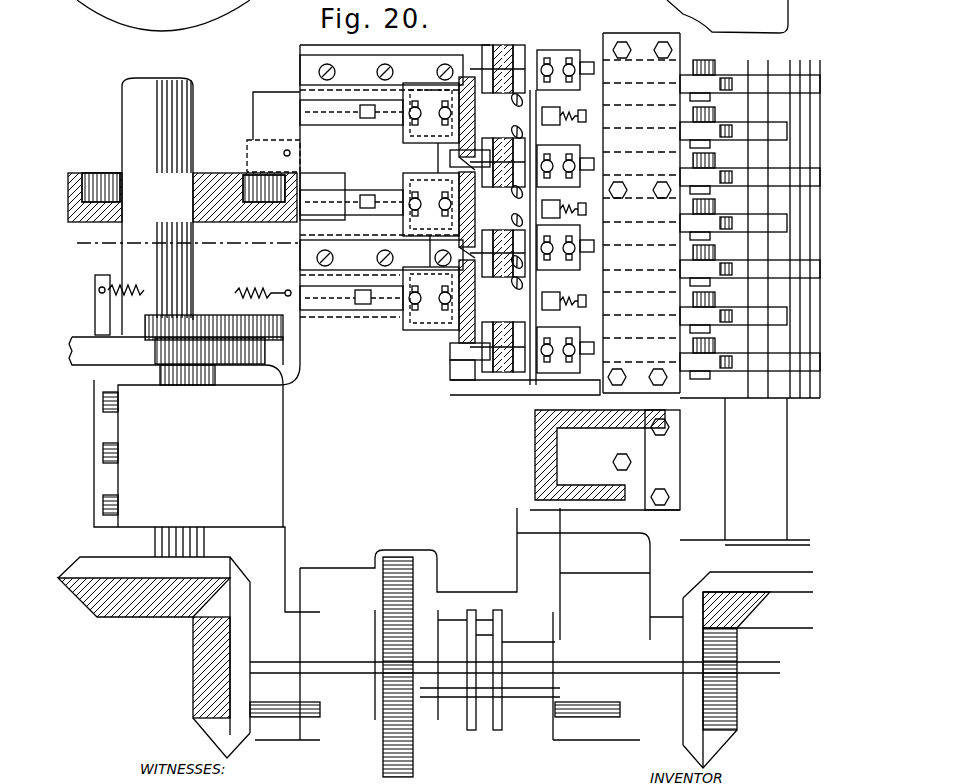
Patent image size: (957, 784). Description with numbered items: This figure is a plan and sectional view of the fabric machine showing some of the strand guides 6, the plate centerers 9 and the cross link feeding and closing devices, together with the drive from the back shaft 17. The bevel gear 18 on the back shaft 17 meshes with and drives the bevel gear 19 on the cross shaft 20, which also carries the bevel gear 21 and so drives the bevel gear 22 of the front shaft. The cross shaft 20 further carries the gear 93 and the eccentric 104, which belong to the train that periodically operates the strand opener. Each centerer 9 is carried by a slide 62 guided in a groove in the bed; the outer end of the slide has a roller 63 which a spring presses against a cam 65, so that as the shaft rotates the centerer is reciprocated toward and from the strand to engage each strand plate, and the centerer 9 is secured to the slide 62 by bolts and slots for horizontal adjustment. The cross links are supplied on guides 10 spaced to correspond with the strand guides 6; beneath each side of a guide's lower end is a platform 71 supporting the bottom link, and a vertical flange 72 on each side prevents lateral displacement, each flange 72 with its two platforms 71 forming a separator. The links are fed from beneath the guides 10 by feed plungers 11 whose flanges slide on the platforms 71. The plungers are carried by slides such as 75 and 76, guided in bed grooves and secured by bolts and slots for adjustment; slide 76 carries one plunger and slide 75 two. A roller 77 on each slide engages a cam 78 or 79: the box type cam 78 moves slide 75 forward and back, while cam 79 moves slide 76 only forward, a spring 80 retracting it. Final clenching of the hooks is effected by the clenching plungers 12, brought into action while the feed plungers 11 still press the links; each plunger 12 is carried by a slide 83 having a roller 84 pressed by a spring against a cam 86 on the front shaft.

The strand guide 6 is at (497, 147).
The centerer 9 is at (520, 352).
The cross link guide 10 is at (457, 173).
The feed plunger 11 is at (420, 318).
The clenching plunger 12 is at (510, 298).
The back shaft 17 is at (128, 117).
The bevel gear 18 is at (100, 618).
The bevel gear 19 is at (195, 710).
The cross shaft 20 is at (267, 714).
The bevel gear 21 is at (722, 727).
The bevel gear 22 is at (762, 618).
The slide 62 is at (597, 358).
The roller 63 is at (708, 383).
The cam 65 is at (765, 368).
The platform 71 is at (452, 338).
The vertical flange 72 is at (452, 357).
The slide 75 is at (381, 186).
The slide 76 is at (316, 298).
The roller 77 is at (267, 177).
The cam 78 is at (212, 178).
The cam 79 is at (211, 321).
The spring 80 is at (298, 226).
The slide 83 is at (605, 303).
The roller 84 is at (707, 313).
The cam 86 is at (737, 325).
The gear 93 is at (407, 760).
The eccentric 104 is at (483, 712).